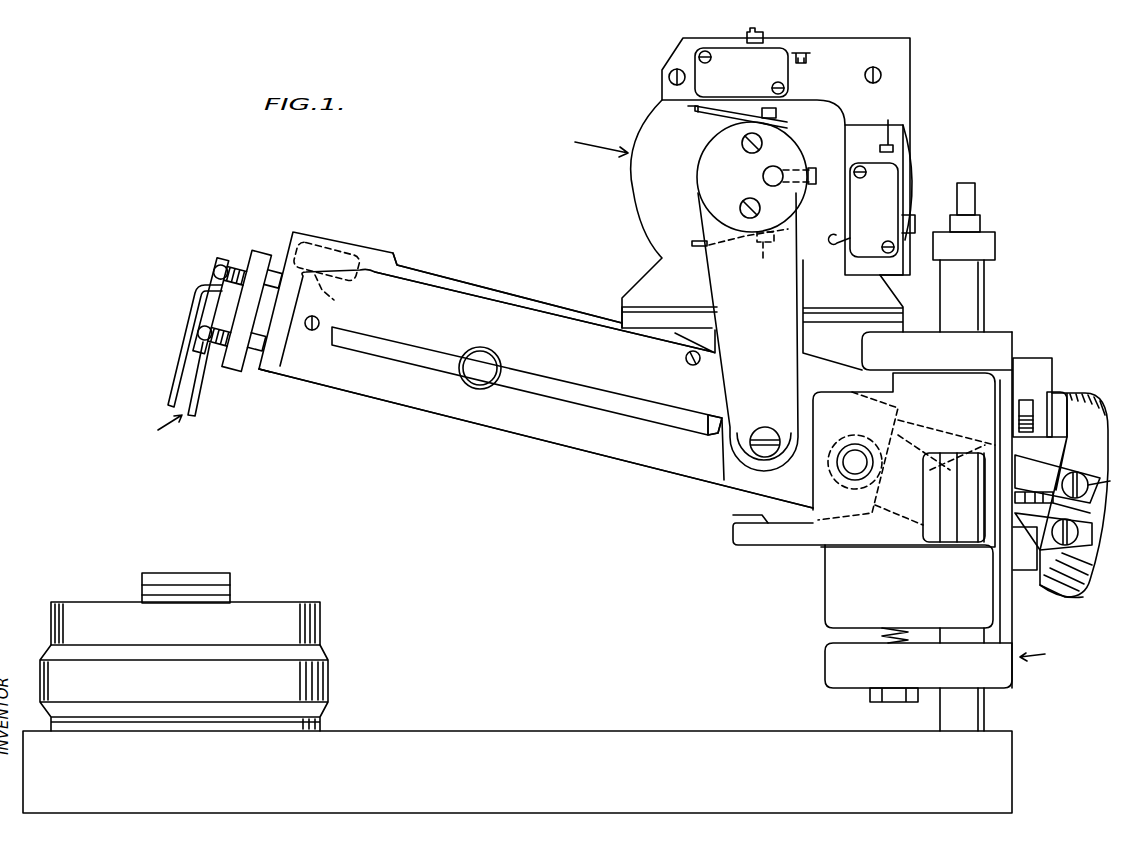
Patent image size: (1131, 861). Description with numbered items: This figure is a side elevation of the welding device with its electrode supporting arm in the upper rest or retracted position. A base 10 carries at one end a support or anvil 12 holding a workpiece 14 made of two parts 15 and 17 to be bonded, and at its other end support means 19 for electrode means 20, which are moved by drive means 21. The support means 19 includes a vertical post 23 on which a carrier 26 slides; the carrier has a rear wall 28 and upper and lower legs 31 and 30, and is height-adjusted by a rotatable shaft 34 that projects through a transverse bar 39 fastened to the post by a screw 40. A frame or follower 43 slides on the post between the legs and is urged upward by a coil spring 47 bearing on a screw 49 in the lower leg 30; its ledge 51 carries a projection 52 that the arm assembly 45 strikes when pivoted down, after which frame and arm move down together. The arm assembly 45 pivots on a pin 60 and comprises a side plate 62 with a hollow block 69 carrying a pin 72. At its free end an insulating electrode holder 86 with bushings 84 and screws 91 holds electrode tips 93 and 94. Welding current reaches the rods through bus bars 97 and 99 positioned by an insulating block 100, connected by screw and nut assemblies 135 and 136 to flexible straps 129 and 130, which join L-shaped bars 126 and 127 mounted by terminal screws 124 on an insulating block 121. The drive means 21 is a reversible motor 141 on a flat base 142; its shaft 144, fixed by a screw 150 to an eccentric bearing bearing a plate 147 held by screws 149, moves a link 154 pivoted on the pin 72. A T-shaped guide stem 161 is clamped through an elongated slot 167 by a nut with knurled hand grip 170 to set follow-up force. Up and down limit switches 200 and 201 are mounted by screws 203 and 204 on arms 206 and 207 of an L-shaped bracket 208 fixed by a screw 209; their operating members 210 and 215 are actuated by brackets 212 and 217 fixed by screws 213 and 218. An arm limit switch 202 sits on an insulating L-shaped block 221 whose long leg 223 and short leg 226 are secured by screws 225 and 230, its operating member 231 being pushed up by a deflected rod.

The base 10 is at (548, 732).
The support or anvil 12 is at (322, 680).
The workpiece 14 is at (232, 588).
The part 15 is at (163, 575).
The part 17 is at (142, 594).
The support means 19 is at (881, 529).
The electrode means 20 is at (151, 429).
The drive means 21 is at (586, 142).
The post 23 is at (986, 295).
The carrier 26 is at (1044, 657).
The rear vertically extending wall 28 is at (1013, 608).
The leg 30 is at (826, 670).
The leg 31 is at (862, 345).
The shaft 34 is at (976, 188).
The transverse bar 39 is at (996, 246).
The screw 40 is at (982, 220).
The frame or follower 43 is at (826, 583).
The arm assembly 45 is at (515, 459).
The coil spring 47 is at (900, 628).
The screw 49 is at (892, 703).
The ledge 51 is at (755, 540).
The vertical projection 52 is at (740, 512).
The pin 60 is at (850, 447).
The side plate 62 is at (437, 410).
The hollow block 69 is at (820, 497).
The pin 72 is at (765, 427).
The bushing 84 is at (226, 325).
The insulating electrode holder 86 is at (258, 255).
The screw 91 is at (200, 334).
The electrode tip 93 is at (182, 372).
The electrode tip 94 is at (200, 385).
The bus bar 97 is at (1074, 471).
The bus bar 99 is at (1043, 540).
The insulating block 100 is at (1057, 479).
The insulating block 121 is at (1030, 358).
The terminal screw 124 is at (1017, 403).
The L-shaped electroconductive bar 126 is at (1050, 405).
The L-shaped electroconductive bar 127 is at (1060, 505).
The flexible strap 129 is at (1092, 393).
The flexible strap 130 is at (1068, 597).
The screw and nut assembly 135 is at (1109, 478).
The screw and nut assembly 136 is at (1078, 536).
The electric motor 141 is at (642, 190).
The flat base 142 is at (620, 315).
The motor shaft 144 is at (779, 170).
The plate 147 is at (700, 186).
The screw 149 is at (746, 199).
The screw 150 is at (815, 185).
The link 154 is at (755, 302).
The stem 161 is at (612, 412).
The elongated slot 167 is at (405, 358).
The knurled hand grip section 170 is at (484, 350).
The up limit switch 200 is at (720, 40).
The down limit switch 201 is at (900, 180).
The arm limit switch 202 is at (340, 245).
The screw 203 is at (777, 82).
The screw 204 is at (866, 178).
The arm 206 is at (670, 72).
The arm 207 is at (897, 267).
The L-shaped bracket 208 is at (912, 45).
The screw 209 is at (881, 78).
The operating member 210 is at (706, 104).
The bracket 212 is at (695, 112).
The screw 213 is at (778, 114).
The operating member 215 is at (838, 243).
The bracket 217 is at (693, 240).
The screw 218 is at (762, 255).
The insulating L-shaped block 221 is at (440, 276).
The long leg 223 is at (503, 300).
The screw 225 is at (686, 360).
The short leg 226 is at (268, 375).
The screw 230 is at (311, 331).
The operating member 231 is at (340, 293).